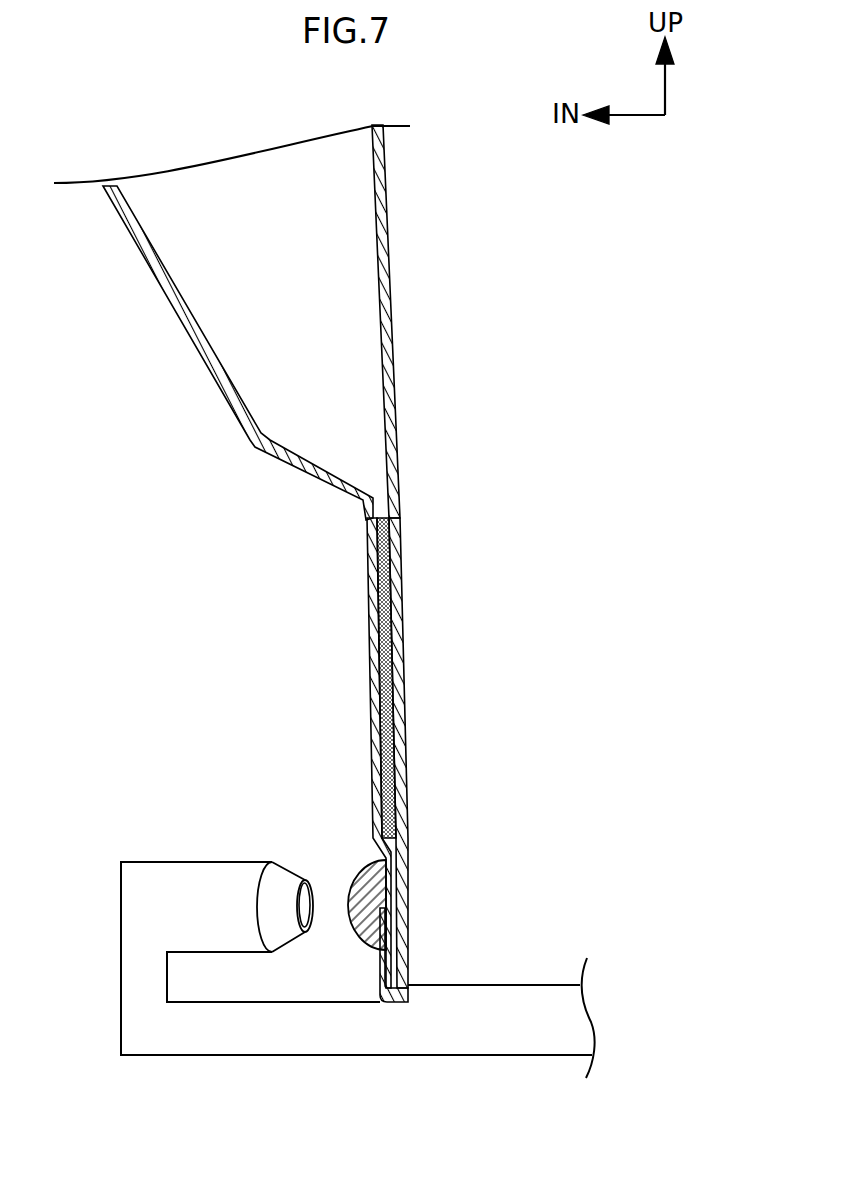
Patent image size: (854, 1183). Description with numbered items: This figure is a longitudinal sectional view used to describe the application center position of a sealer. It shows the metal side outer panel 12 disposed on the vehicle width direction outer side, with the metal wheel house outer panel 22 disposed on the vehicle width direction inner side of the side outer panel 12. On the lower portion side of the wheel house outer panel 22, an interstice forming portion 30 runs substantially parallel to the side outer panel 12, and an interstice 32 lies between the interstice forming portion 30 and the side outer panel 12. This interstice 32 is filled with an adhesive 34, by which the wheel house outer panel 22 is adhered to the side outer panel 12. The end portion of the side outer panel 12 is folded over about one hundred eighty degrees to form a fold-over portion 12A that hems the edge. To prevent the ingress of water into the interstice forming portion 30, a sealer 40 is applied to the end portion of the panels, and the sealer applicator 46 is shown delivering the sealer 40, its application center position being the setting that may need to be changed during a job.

The side outer panel 12 is at (412, 550).
The fold-over portion 12A is at (380, 967).
The wheel house outer panel 22 is at (387, 753).
The interstice forming portion 30 is at (373, 693).
The interstice 32 is at (393, 590).
The adhesive 34 is at (390, 658).
The sealer 40 is at (370, 870).
The sealer applicator 46 is at (192, 1057).